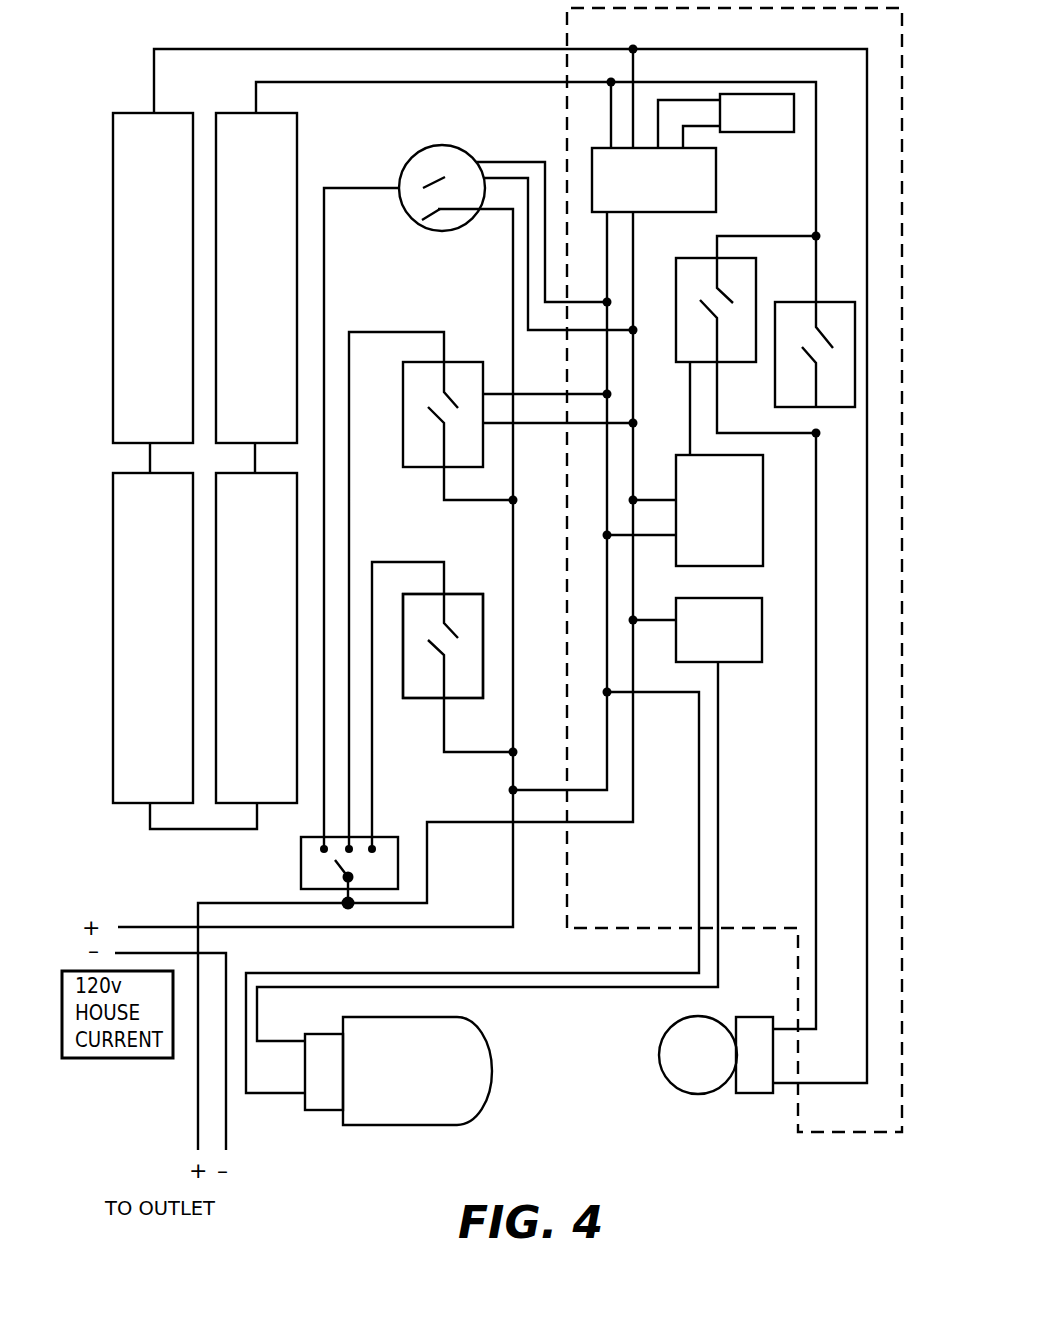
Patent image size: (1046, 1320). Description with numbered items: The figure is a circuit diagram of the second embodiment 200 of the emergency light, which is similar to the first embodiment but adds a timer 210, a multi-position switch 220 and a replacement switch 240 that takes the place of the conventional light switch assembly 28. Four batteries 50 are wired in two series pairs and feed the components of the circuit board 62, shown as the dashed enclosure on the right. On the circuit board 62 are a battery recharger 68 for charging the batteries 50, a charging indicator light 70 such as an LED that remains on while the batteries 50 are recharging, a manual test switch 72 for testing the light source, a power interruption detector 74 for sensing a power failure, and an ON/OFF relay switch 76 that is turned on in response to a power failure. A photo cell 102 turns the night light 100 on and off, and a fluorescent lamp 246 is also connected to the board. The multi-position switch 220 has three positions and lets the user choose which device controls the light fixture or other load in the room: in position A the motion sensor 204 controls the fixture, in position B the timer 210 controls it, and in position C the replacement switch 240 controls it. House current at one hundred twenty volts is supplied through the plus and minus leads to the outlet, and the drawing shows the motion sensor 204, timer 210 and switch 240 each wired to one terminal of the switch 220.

The second embodiment 200 is at (192, 425).
The batteries 50 is at (270, 637).
The circuit board 62 is at (566, 22).
The motion sensor 204 is at (450, 225).
The timer 210 is at (457, 453).
The replacement switch 240 is at (469, 604).
The light switch assembly 28 is at (457, 693).
The multi-position switch 220 is at (299, 851).
The battery recharger 68 is at (660, 197).
The charging indicator light 70 is at (733, 122).
The ON/OFF relay switch 76 is at (700, 262).
The manual test switch 72 is at (803, 310).
The power interruption detector 74 is at (704, 530).
The photo cell 102 is at (730, 653).
The night light 100 is at (478, 1042).
The fluorescent lamp 246 is at (693, 1087).